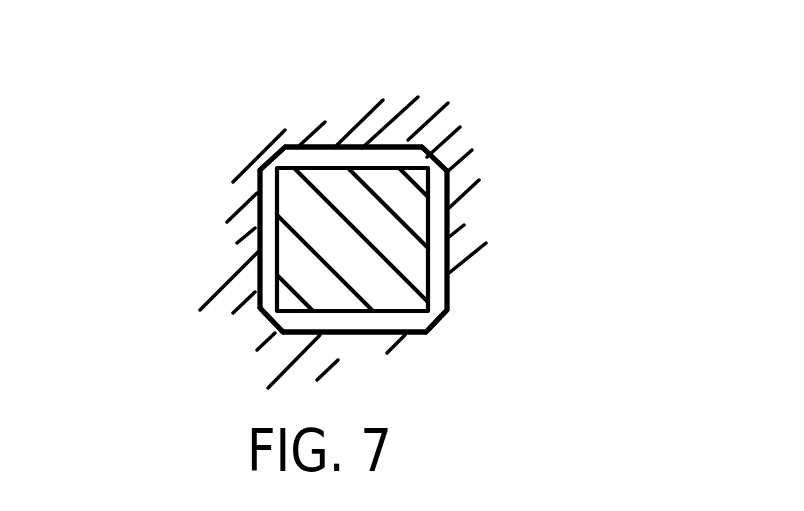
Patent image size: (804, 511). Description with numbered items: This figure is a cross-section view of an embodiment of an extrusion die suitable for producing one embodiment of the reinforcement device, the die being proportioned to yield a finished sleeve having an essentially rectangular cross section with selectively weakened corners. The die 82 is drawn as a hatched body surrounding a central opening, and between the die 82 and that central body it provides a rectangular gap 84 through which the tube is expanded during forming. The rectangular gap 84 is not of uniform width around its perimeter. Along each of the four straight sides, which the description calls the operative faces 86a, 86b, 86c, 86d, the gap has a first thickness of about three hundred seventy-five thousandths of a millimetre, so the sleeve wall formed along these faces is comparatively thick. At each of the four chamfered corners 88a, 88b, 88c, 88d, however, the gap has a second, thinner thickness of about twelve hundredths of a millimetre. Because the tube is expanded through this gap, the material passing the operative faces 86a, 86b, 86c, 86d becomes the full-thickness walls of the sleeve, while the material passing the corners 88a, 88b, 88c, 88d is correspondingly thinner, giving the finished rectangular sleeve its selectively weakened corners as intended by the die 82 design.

The die 82 is at (449, 258).
The rectangular gap 84 is at (449, 278).
The operative face 86a is at (349, 157).
The operative face 86b is at (435, 296).
The operative face 86c is at (338, 318).
The operative face 86d is at (268, 235).
The corner 88a is at (447, 168).
The corner 88b is at (438, 313).
The corner 88c is at (268, 320).
The corner 88d is at (280, 157).